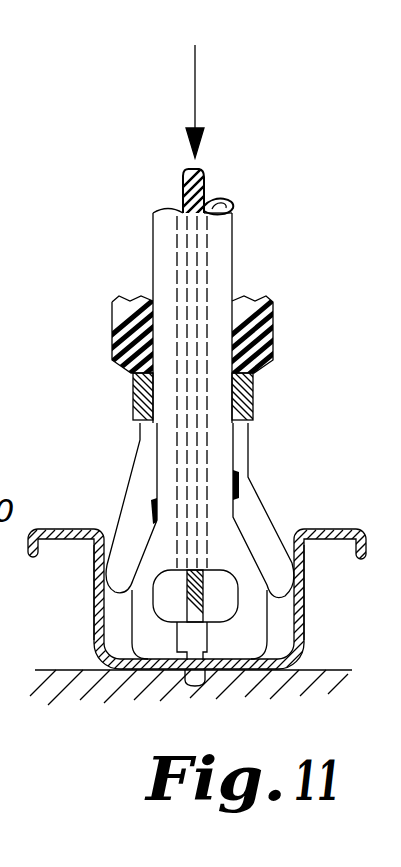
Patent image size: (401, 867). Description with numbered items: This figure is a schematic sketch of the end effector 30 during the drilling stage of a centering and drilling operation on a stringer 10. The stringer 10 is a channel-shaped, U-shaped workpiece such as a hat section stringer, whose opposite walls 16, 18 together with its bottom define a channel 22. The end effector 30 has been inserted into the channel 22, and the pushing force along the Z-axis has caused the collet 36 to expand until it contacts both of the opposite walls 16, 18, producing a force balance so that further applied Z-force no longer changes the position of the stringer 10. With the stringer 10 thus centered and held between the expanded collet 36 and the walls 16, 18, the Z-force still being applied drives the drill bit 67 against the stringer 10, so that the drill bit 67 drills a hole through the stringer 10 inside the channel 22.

The stringer 10 is at (364, 530).
The wall 16 is at (95, 627).
The wall 18 is at (304, 641).
The channel 22 is at (280, 623).
The end effector 30 is at (290, 398).
The collet 36 is at (122, 518).
The drill bit 67 is at (190, 682).